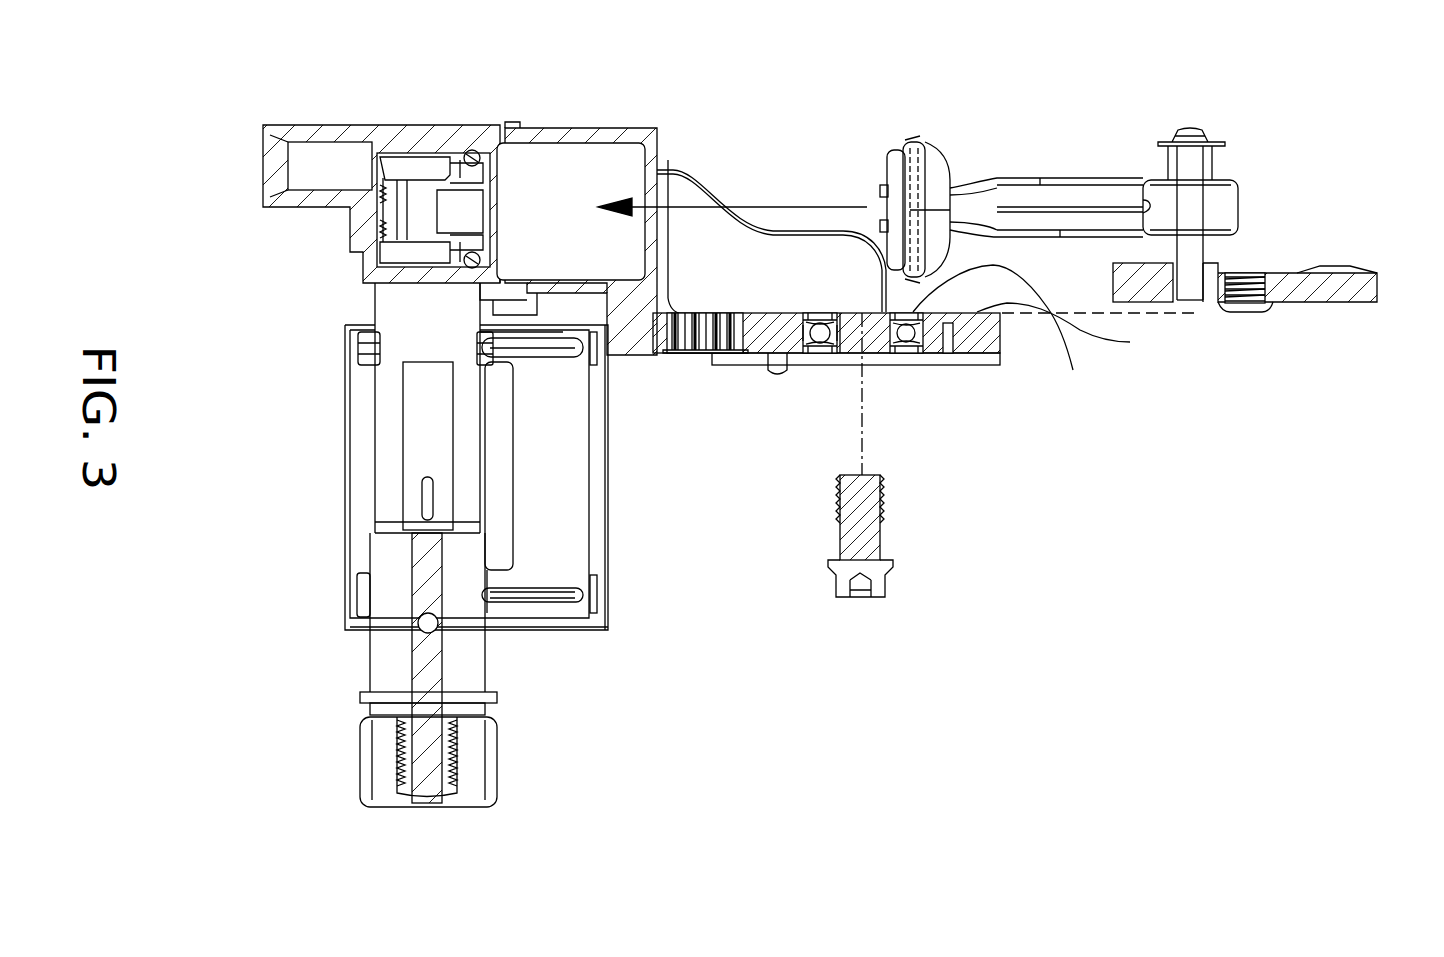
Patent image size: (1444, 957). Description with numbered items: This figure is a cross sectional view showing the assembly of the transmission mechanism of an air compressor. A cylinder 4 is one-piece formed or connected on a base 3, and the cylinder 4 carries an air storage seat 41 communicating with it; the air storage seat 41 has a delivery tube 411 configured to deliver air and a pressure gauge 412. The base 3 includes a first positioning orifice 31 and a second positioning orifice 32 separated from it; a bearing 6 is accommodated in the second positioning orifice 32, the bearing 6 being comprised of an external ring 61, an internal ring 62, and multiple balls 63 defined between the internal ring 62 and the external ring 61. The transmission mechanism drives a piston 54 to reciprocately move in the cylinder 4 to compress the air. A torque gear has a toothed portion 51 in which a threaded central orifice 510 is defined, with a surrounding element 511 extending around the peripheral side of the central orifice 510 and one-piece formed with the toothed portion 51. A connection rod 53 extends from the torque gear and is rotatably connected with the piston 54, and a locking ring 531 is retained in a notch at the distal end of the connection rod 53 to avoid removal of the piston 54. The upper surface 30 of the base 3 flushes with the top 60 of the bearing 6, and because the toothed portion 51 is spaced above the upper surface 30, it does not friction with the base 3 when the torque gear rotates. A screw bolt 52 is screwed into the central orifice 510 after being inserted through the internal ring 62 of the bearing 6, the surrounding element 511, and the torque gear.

The base 3 is at (894, 394).
The cylinder 4 is at (587, 135).
The bearing 6 is at (930, 353).
The upper surface 30 is at (1047, 307).
The first positioning orifice 31 is at (690, 352).
The second positioning orifice 32 is at (885, 355).
The air storage seat 41 is at (348, 163).
The toothed portion 51 is at (1270, 306).
The screw bolt 52 is at (877, 540).
The connection rod 53 is at (1197, 172).
The piston 54 is at (1020, 192).
The top of the bearing 60 is at (911, 265).
The external ring 61 is at (804, 397).
The internal ring 62 is at (828, 355).
The balls 63 is at (823, 355).
The delivery tube 411 is at (263, 130).
The pressure gauge 412 is at (380, 438).
The central orifice 510 is at (1242, 318).
The surrounding element 511 is at (1270, 315).
The locking ring 531 is at (1218, 142).